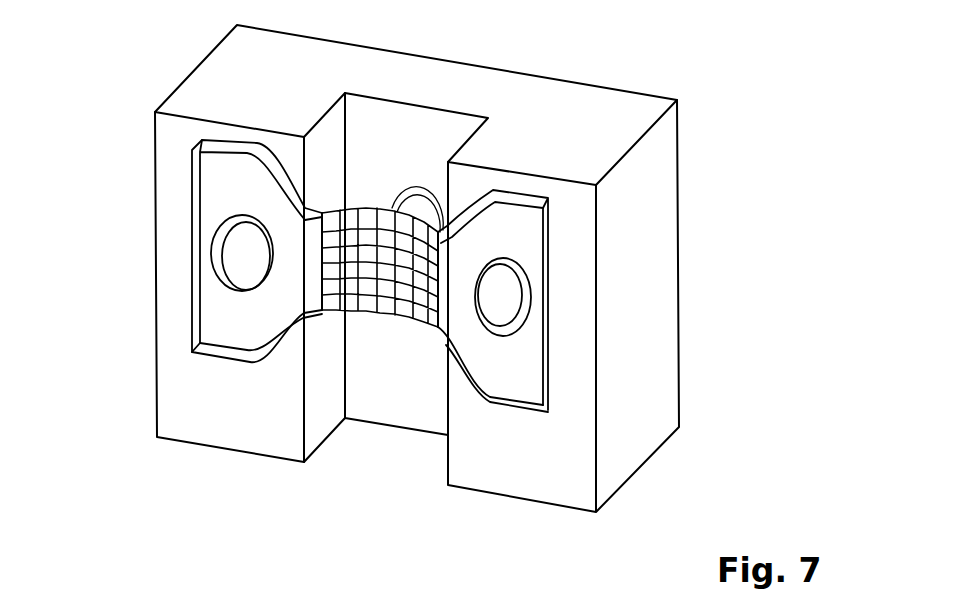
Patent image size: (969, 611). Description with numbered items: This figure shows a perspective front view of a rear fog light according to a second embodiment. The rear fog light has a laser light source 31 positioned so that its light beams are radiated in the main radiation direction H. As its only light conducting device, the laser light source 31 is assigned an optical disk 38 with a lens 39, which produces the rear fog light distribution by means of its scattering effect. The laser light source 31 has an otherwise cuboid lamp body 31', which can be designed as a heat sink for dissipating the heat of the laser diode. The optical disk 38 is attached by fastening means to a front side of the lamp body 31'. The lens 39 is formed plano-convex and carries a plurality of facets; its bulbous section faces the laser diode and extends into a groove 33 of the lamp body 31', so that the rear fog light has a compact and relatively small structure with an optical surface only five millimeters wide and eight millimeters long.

The laser light source 31 is at (372, 277).
The lamp body 31' is at (602, 306).
The groove 33 is at (442, 138).
The optical disk 38 is at (515, 235).
The lens 39 is at (390, 343).
The main radiation direction H is at (112, 283).